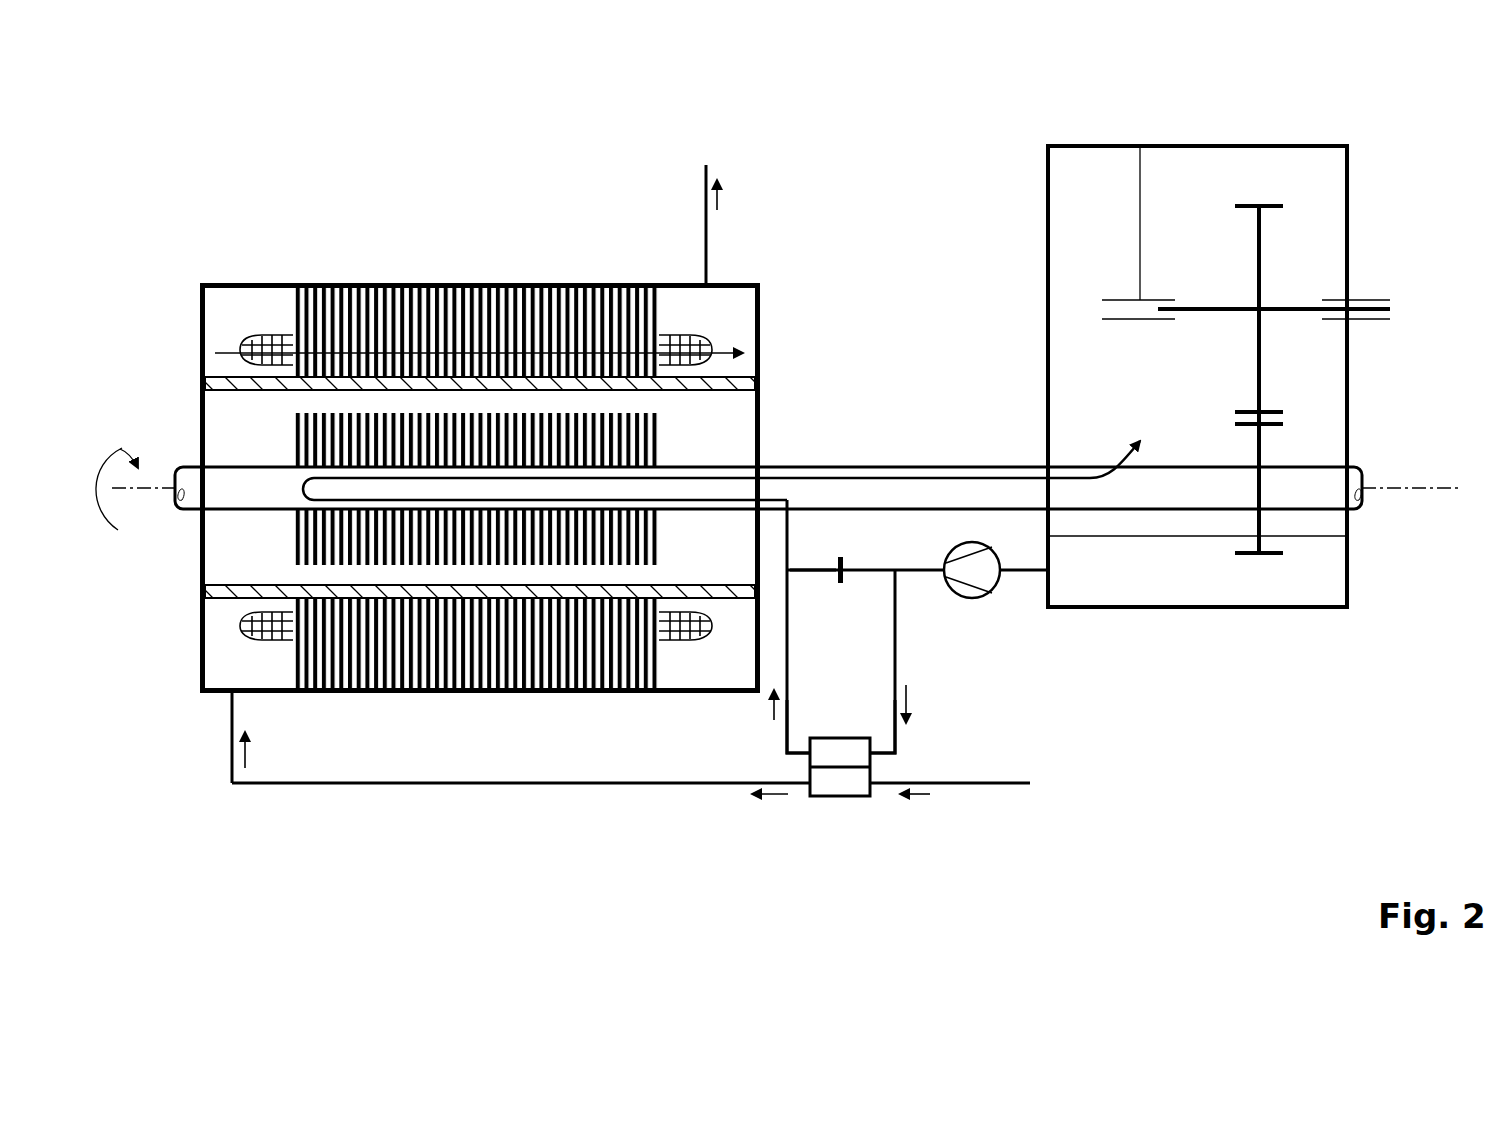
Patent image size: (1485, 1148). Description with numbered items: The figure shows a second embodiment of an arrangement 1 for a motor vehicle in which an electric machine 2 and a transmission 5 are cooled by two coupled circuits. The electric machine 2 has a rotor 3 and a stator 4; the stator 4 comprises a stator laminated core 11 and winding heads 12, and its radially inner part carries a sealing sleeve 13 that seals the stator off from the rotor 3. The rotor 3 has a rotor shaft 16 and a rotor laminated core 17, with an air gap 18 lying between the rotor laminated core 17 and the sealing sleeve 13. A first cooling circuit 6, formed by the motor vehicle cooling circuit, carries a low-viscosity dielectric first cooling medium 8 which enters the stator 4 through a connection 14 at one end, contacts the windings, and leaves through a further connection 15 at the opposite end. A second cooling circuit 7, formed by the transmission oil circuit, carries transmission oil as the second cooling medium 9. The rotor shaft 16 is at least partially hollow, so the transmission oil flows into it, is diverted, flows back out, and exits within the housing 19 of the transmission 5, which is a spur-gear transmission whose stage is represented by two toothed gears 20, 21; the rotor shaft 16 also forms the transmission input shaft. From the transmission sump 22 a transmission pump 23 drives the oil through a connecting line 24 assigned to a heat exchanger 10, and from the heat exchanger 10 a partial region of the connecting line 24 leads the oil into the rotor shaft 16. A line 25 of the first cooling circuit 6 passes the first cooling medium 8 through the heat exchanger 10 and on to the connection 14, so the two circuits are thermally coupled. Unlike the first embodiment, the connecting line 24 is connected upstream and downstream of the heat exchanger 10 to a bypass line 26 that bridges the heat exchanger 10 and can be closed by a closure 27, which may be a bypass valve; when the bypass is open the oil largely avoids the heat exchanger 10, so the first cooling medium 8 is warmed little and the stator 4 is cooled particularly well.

The arrangement 1 is at (890, 140).
The electric machine 2 is at (452, 228).
The rotor 3 is at (494, 480).
The stator 4 is at (492, 487).
The transmission 5 is at (1236, 336).
The first cooling circuit 6 is at (735, 252).
The second cooling circuit 7 is at (970, 475).
The first cooling medium 8 is at (218, 338).
The second cooling medium 9 is at (908, 478).
The heat exchanger 10 is at (843, 786).
The stator laminated core 11 is at (343, 290).
The winding head 12 is at (258, 335).
The sealing sleeve 13 is at (222, 592).
The connection 14 is at (218, 708).
The further connection 15 is at (692, 260).
The rotor shaft 16 is at (252, 490).
The rotor laminated core 17 is at (662, 542).
The air gap 18 is at (300, 402).
The housing 19 is at (1212, 146).
The toothed gear 20 is at (1262, 432).
The toothed gear 21 is at (1262, 215).
The transmission sump 22 is at (1315, 583).
The transmission pump 23 is at (972, 598).
The connecting line 24 is at (787, 750).
The line 25 is at (698, 785).
The bypass line 26 is at (805, 573).
The closure 27 is at (842, 583).